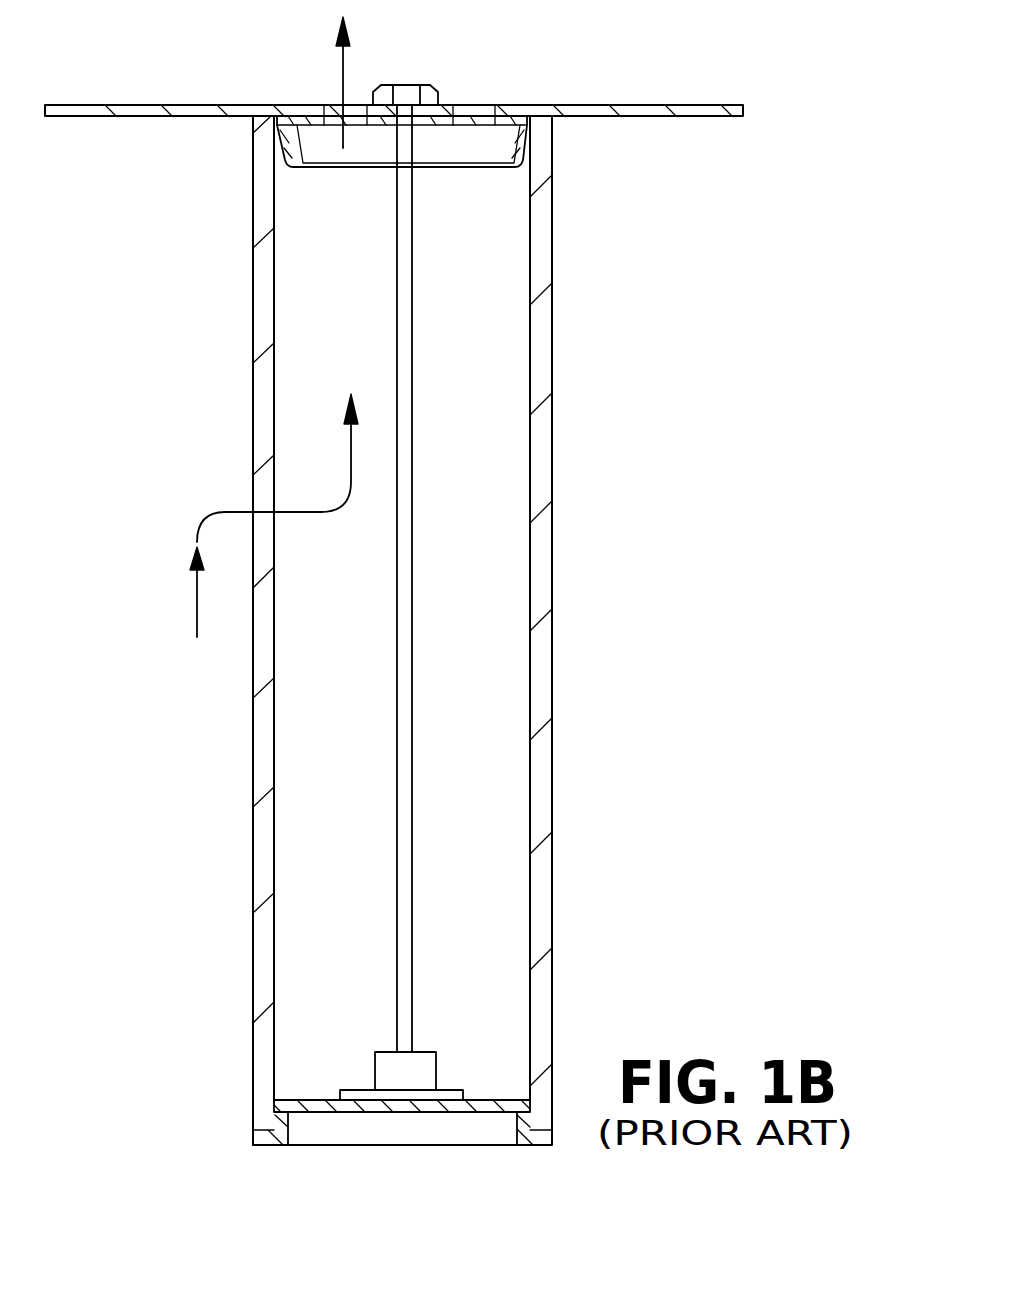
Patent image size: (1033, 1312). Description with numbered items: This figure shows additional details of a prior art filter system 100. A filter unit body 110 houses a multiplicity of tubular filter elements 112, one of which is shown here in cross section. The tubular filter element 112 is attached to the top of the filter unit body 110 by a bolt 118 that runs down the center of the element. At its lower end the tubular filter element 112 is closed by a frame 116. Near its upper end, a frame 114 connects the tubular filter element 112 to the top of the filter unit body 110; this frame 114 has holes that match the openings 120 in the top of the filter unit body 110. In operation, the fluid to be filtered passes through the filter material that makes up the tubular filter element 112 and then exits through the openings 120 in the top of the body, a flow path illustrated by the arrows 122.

The filter system 100 is at (394, 579).
The filter unit body 110 is at (146, 105).
The tubular filter element 112 is at (553, 450).
The frame 114 is at (328, 167).
The frame 116 is at (487, 1100).
The bolt 118 is at (396, 683).
The openings 120 is at (478, 115).
The arrows 122 is at (342, 63).